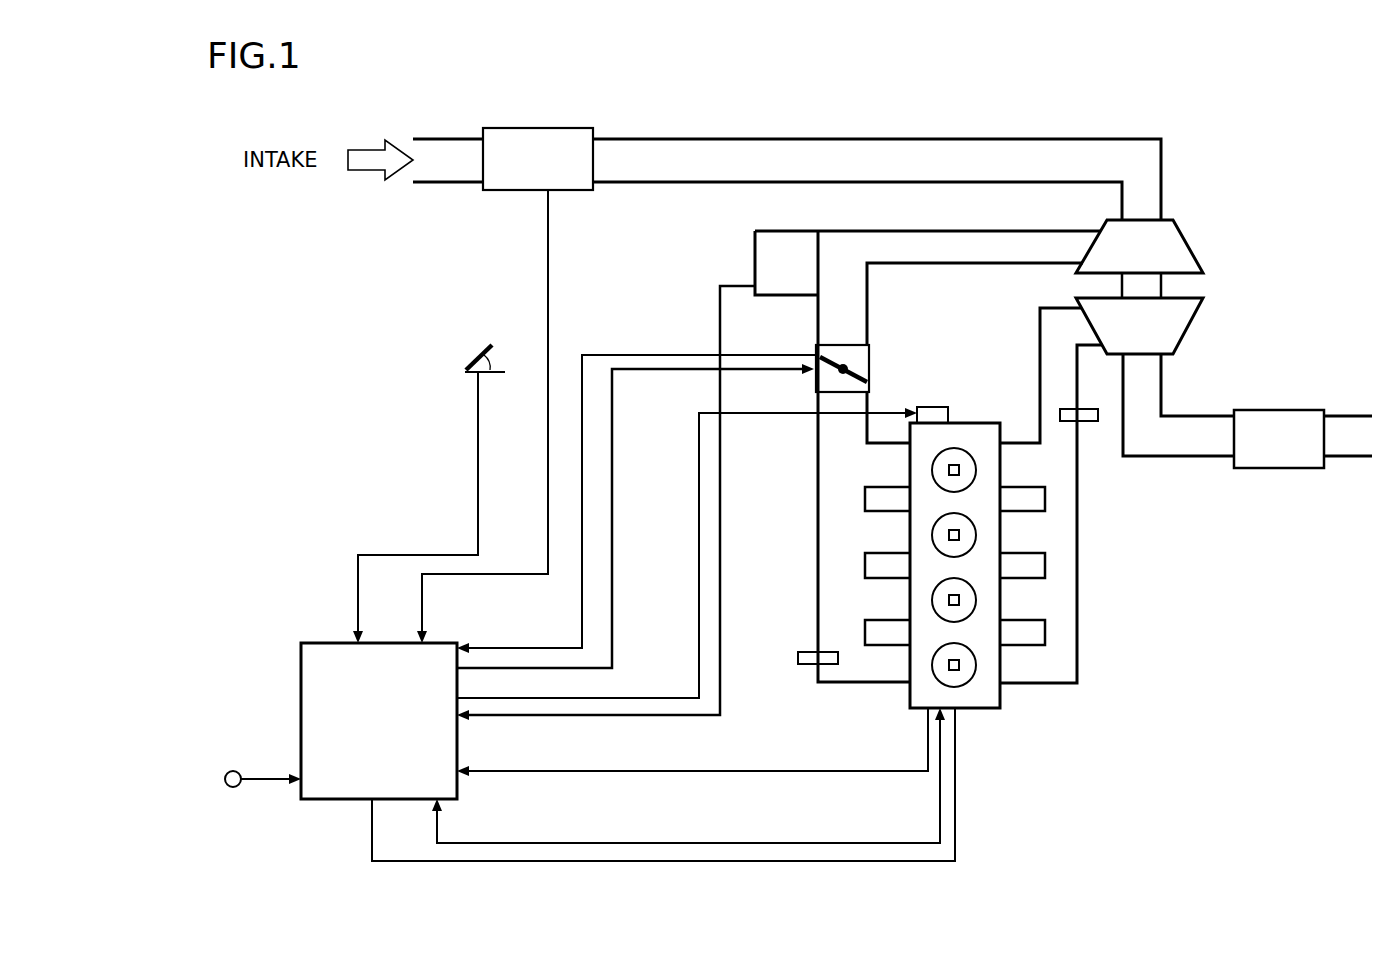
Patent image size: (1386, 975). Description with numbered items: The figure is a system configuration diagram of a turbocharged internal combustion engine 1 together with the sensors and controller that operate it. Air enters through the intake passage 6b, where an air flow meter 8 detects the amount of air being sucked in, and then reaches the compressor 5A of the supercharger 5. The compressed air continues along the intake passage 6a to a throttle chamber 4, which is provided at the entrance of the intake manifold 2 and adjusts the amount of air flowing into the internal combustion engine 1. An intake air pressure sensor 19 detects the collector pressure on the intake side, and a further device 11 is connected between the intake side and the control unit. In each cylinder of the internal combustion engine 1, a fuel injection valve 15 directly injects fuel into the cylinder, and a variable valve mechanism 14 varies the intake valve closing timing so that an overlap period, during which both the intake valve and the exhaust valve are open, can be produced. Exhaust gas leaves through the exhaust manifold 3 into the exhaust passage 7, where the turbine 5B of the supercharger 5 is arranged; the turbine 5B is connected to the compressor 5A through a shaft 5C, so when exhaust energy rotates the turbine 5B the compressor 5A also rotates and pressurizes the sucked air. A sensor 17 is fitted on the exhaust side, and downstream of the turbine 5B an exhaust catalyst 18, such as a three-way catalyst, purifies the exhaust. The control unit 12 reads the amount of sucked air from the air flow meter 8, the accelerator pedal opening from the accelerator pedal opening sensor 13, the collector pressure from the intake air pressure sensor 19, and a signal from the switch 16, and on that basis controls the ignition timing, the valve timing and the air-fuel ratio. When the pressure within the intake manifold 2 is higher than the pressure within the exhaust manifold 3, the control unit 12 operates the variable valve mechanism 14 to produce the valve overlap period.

The internal combustion engine 1 is at (967, 695).
The intake manifold 2 is at (858, 667).
The exhaust manifold 3 is at (1058, 588).
The throttle chamber 4 is at (875, 363).
The supercharger 5 is at (1180, 278).
The compressor 5A is at (1170, 234).
The turbine 5B is at (1170, 325).
The shaft 5C is at (1165, 283).
The intake passage 6a is at (985, 250).
The intake passage 6b is at (986, 152).
The exhaust passage 7 is at (1198, 443).
The air flow meter 8 is at (555, 128).
The bypass valve 11 is at (787, 246).
The control unit 12 is at (315, 722).
The accelerator pedal opening sensor 13 is at (472, 351).
The variable valve mechanism 14 is at (940, 407).
The fuel injection valve 15 is at (958, 668).
The ignition switch 16 is at (230, 770).
The exhaust gas sensor 17 is at (1086, 418).
The exhaust catalyst 18 is at (1273, 453).
The intake air pressure sensor 19 is at (805, 657).